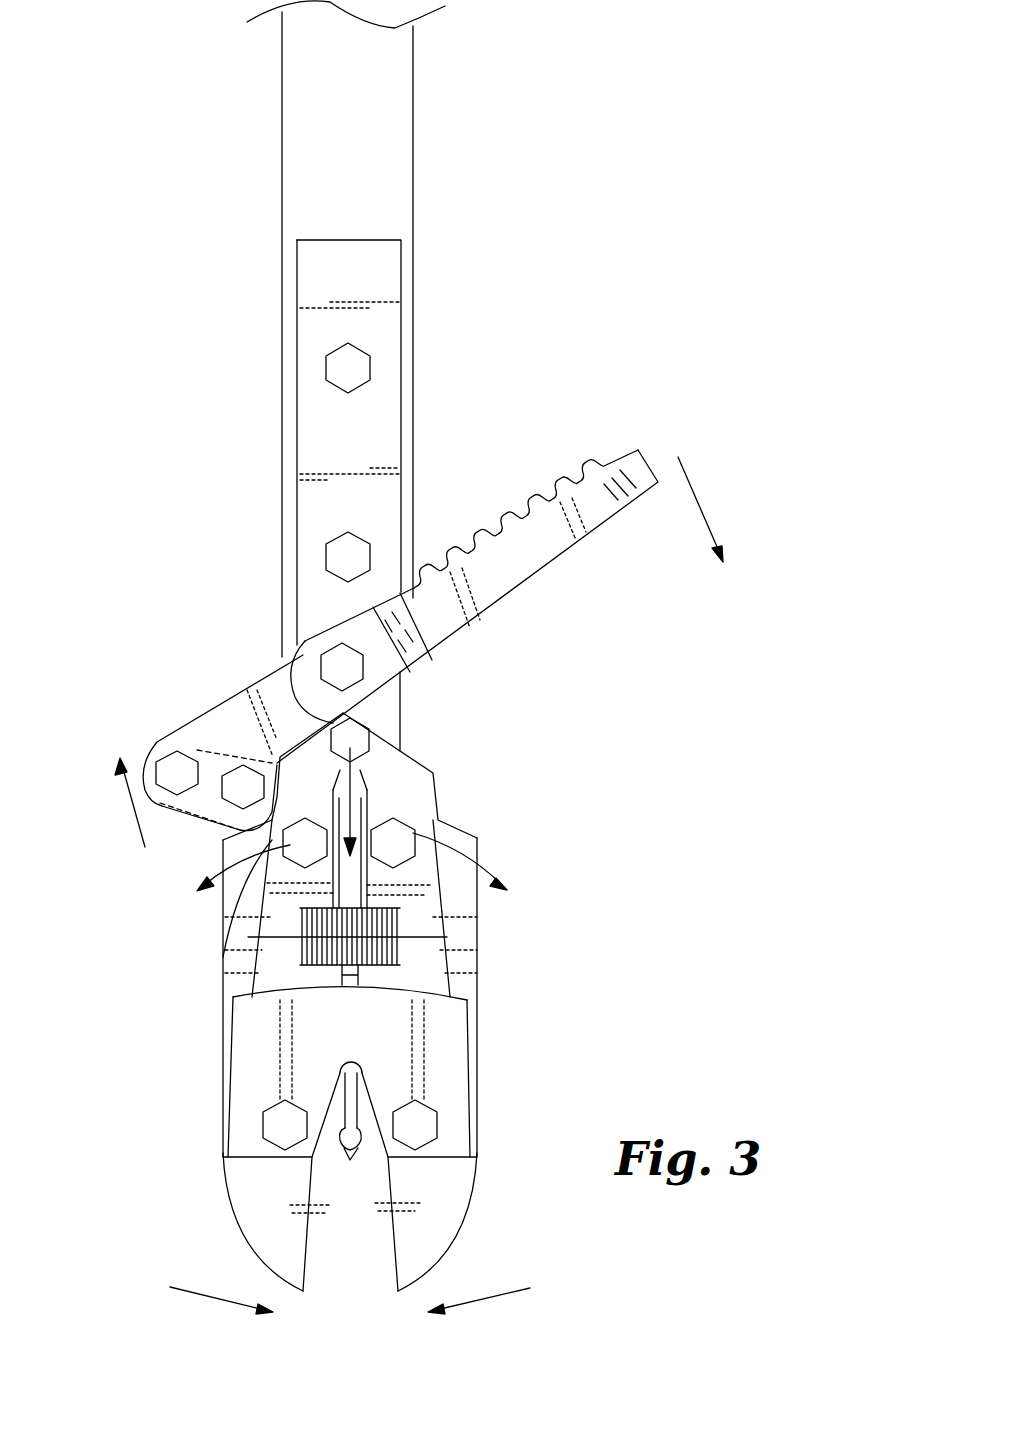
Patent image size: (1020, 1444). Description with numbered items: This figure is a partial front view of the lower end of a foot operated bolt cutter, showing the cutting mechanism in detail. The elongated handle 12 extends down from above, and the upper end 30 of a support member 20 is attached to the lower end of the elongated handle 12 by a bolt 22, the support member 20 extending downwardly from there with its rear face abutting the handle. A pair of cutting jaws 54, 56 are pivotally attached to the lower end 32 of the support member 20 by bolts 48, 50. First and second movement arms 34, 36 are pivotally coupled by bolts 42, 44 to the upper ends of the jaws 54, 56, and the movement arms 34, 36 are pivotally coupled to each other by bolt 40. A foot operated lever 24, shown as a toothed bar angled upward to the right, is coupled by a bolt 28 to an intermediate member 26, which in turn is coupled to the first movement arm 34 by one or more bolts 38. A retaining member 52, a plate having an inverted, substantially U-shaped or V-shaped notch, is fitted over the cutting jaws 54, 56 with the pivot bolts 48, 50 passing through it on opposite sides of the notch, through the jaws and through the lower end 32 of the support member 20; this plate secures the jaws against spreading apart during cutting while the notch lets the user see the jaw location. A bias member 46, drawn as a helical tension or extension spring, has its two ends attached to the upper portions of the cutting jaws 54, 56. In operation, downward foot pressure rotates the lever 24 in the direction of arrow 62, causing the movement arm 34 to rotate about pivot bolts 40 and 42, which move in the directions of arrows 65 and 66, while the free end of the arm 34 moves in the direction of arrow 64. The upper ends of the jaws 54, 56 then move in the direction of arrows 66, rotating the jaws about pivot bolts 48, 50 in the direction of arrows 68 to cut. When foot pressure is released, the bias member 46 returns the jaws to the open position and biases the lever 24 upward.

The elongated handle 12 is at (413, 203).
The upper end of support member 30 is at (315, 287).
The support member 20 is at (388, 433).
The bolt 22 is at (372, 368).
The foot operated lever 24 is at (540, 553).
The bolt 28 is at (330, 665).
The directional arrow 62 is at (700, 495).
The intermediate member 26 is at (232, 713).
The bolts 38 is at (152, 765).
The arrow 64 is at (127, 810).
The bolt 40 is at (372, 730).
The second movement arm 36 is at (438, 772).
The arrow 65 is at (358, 790).
The bolt 44 is at (443, 825).
The first movement arm 34 is at (283, 843).
The arrows 66 is at (224, 870).
The bolt 42 is at (228, 955).
The lower end of support member 32 is at (478, 975).
The bias member 46 is at (302, 990).
The retaining member 52 is at (240, 1078).
The bolt 48 is at (262, 1125).
The bolt 50 is at (437, 1125).
The cutting jaw 54 is at (245, 1242).
The cutting jaw 56 is at (465, 1215).
The arrows 68 is at (190, 1291).